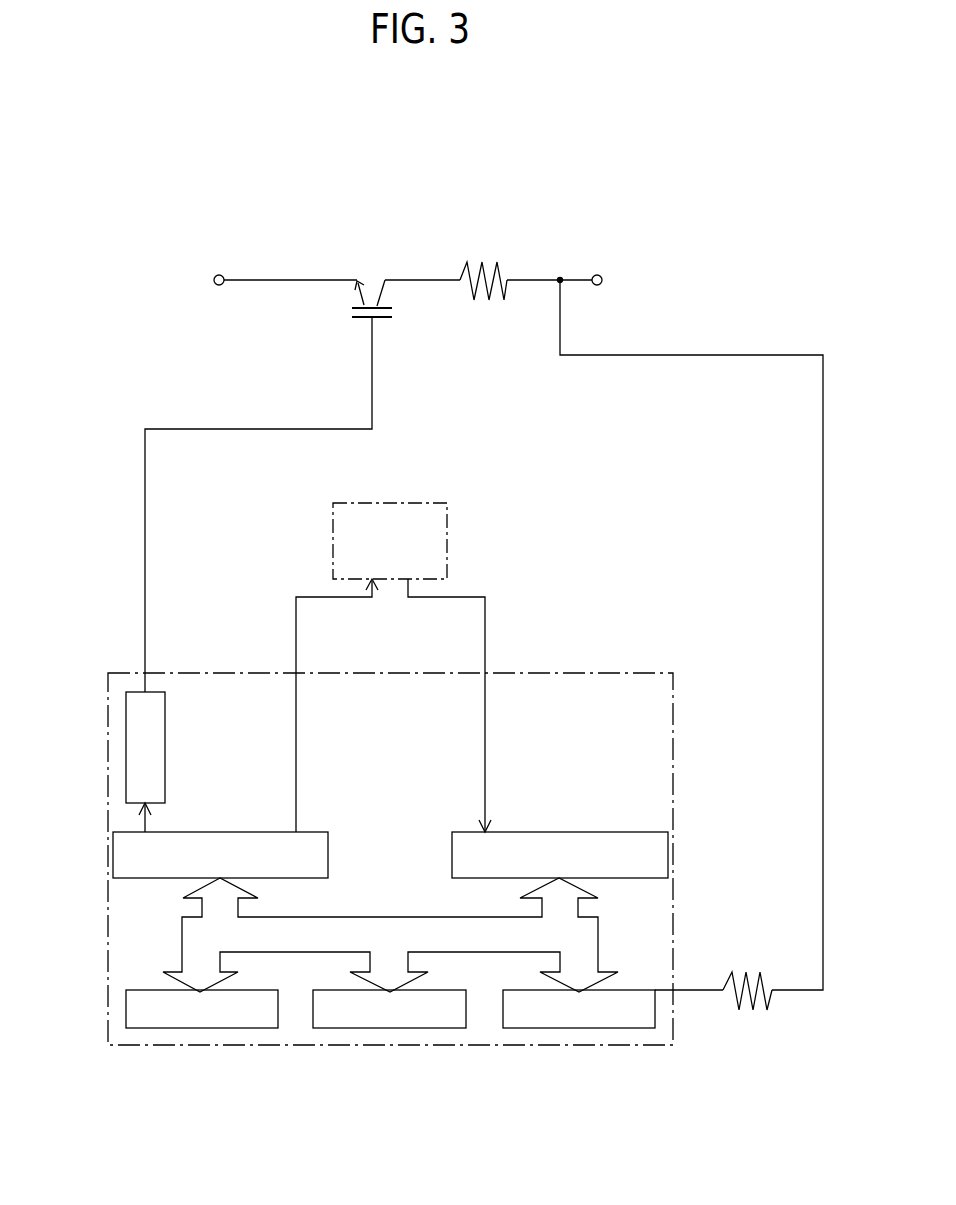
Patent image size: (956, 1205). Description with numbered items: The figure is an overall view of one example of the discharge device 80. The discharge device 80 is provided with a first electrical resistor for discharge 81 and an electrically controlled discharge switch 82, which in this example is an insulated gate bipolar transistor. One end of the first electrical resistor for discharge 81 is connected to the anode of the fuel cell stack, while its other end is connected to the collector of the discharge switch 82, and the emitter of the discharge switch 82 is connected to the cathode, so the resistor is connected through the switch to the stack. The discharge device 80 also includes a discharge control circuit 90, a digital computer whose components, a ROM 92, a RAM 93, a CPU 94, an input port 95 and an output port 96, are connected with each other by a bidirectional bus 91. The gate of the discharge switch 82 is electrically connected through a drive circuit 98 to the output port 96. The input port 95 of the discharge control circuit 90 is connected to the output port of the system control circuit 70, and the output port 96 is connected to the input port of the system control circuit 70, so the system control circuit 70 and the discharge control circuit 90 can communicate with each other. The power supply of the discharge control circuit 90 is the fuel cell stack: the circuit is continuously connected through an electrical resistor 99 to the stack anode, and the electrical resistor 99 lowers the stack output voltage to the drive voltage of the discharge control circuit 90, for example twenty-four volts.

The discharge device 80 is at (611, 181).
The first electrical resistor for discharge 81 is at (483, 262).
The discharge switch 82 is at (347, 302).
The system control circuit 70 is at (448, 512).
The discharge control circuit 90 is at (107, 717).
The bidirectional bus 91 is at (598, 937).
The ROM 92 is at (263, 1028).
The RAM 93 is at (453, 1028).
The CPU 94 is at (642, 1028).
The input port 95 is at (452, 865).
The output port 96 is at (329, 850).
The drive circuit 98 is at (166, 704).
The electrical resistor 99 is at (747, 971).